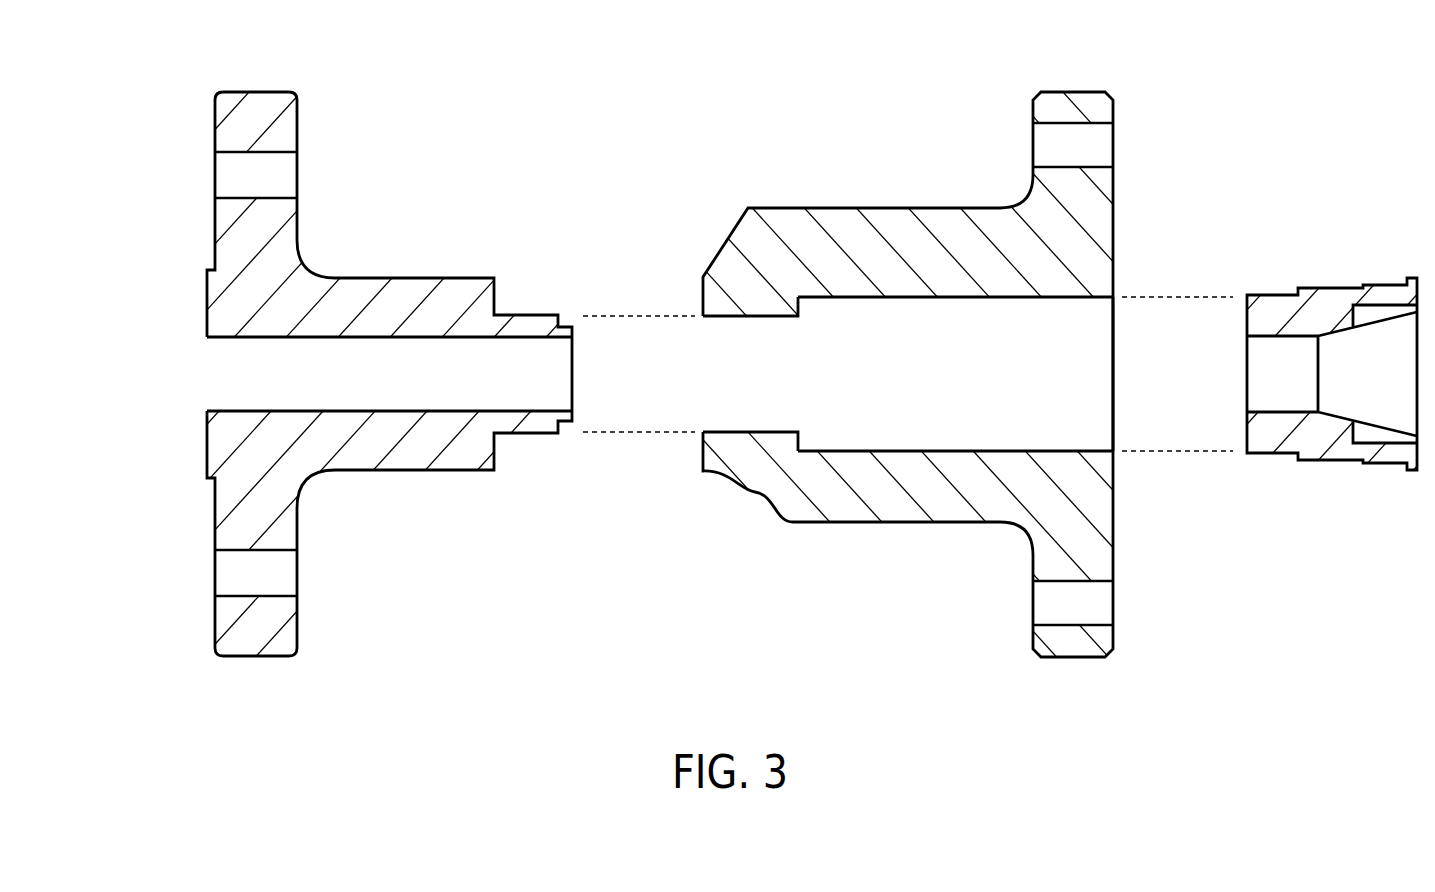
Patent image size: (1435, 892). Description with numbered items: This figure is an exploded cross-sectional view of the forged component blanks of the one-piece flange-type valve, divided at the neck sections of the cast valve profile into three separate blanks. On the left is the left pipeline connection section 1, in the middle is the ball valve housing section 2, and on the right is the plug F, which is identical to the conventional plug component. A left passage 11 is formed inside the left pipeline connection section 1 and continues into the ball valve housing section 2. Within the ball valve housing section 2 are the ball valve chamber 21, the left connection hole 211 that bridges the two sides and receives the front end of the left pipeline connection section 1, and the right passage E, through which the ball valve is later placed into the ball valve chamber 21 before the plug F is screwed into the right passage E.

The left pipeline connection section 1 is at (717, 388).
The left passage 11 is at (228, 385).
The ball valve housing section 2 is at (717, 388).
The ball valve chamber 21 is at (835, 422).
The left connection hole 211 is at (723, 388).
The right passage E is at (1068, 392).
The plug F is at (1332, 263).